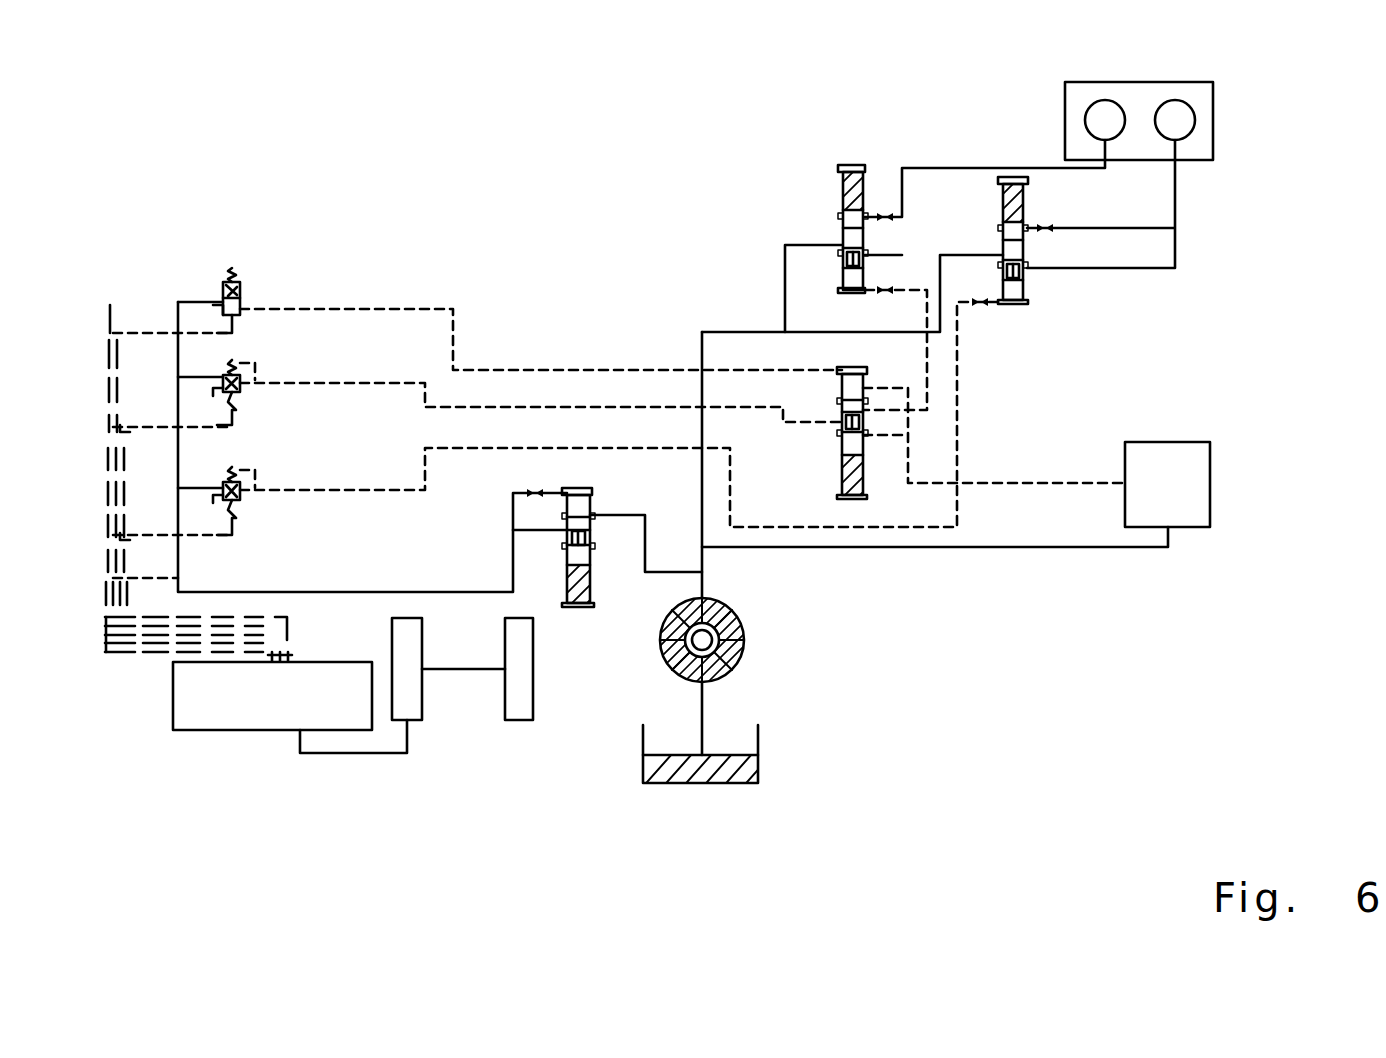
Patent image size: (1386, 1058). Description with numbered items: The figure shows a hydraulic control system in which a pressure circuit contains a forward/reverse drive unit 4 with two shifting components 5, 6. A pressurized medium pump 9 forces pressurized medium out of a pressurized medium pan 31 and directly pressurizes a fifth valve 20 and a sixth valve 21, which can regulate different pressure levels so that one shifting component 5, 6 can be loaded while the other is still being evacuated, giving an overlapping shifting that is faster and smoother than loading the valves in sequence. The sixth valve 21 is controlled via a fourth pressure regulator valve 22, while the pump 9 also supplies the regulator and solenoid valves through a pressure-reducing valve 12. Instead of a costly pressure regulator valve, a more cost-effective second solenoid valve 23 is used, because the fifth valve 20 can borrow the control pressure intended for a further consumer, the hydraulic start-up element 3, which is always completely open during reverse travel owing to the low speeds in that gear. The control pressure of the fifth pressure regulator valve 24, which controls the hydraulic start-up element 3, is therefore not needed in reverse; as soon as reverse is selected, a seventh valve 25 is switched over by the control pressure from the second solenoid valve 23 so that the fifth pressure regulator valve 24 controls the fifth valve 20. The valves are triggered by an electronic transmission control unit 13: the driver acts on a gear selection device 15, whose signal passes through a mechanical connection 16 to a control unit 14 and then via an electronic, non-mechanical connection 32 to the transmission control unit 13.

The hydraulic start-up element 3 is at (1190, 470).
The forward/reverse drive unit 4 is at (1203, 97).
The shifting component 5 is at (1175, 125).
The shifting component 6 is at (1105, 125).
The pressurized medium pump 9 is at (740, 657).
The pressure-reducing valve 12 is at (583, 607).
The electronic transmission control unit 13 is at (208, 712).
The control unit 14 is at (412, 698).
The gear selection device 15 is at (525, 657).
The mechanical connection 16 is at (472, 669).
The fifth valve 20 is at (850, 170).
The sixth valve 21 is at (1010, 232).
The fourth pressure regulator valve 22 is at (243, 488).
The second solenoid valve 23 is at (243, 293).
The fifth pressure regulator valve 24 is at (243, 383).
The seventh valve 25 is at (863, 487).
The pressurized medium pan 31 is at (710, 775).
The non-mechanical connection 32 is at (323, 755).